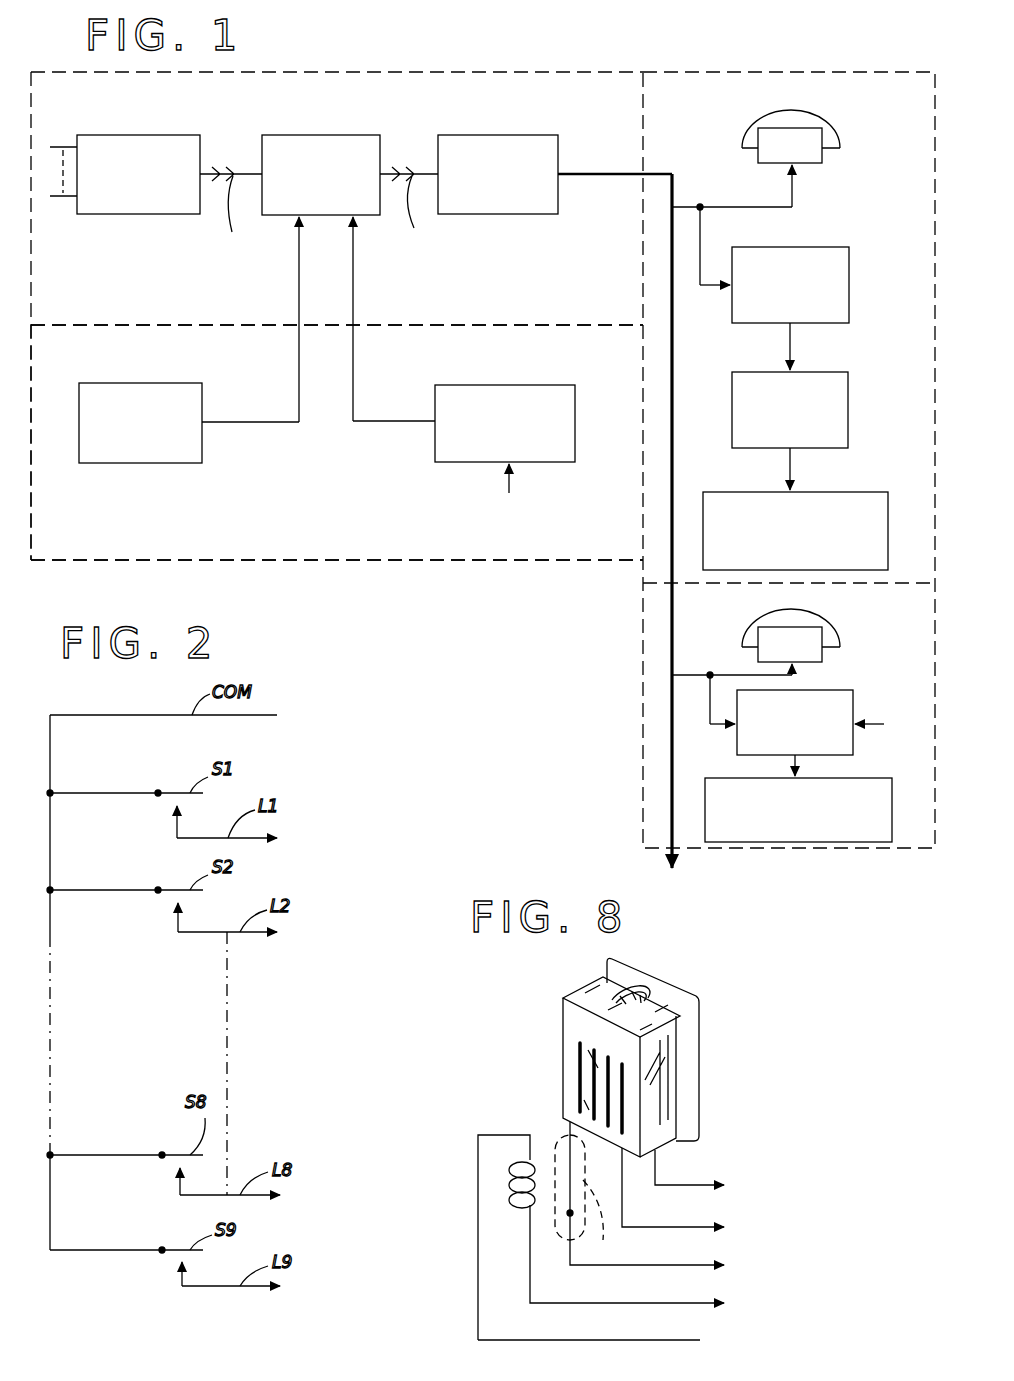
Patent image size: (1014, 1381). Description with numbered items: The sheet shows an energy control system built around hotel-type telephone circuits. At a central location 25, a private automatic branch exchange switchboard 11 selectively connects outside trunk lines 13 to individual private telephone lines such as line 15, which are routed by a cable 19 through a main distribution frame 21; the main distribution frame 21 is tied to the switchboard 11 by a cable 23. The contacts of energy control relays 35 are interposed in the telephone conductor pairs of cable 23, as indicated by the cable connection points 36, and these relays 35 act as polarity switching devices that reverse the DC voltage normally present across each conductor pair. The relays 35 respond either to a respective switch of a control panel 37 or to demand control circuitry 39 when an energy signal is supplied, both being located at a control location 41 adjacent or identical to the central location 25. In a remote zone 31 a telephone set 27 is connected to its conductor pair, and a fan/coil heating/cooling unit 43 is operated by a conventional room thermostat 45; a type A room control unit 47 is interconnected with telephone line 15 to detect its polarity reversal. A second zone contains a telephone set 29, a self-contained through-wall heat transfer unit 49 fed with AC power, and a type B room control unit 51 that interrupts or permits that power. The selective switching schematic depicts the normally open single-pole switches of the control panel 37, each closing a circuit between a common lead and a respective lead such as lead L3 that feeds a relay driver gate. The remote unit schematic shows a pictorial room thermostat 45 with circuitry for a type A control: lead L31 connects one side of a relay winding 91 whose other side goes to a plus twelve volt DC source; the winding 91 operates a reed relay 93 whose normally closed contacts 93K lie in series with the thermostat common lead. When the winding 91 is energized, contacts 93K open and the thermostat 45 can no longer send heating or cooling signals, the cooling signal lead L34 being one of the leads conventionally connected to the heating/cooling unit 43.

In FIG. 1, the private automatic branch exchange central switchboard 11 is at (126, 135).
In FIG. 1, the trunk lines 13 is at (60, 147).
In FIG. 1, the individual private telephone line 15 is at (690, 207).
In FIG. 1, the cable 19 is at (610, 174).
In FIG. 1, the main distribution frame 21 is at (493, 135).
In FIG. 1, the cable 23 is at (233, 172).
In FIG. 1, the central location 25 is at (376, 72).
In FIG. 1, the telephone set 27 is at (832, 151).
In FIG. 1, the telephone set 29 is at (832, 646).
In FIG. 1, the zone 31 is at (770, 72).
In FIG. 1, the energy control relays 35 is at (320, 135).
In FIG. 1, the cable connection points 36 is at (329, 215).
In FIG. 1, the control panel 37 is at (150, 383).
In FIG. 1, the demand control circuitry 39 is at (495, 385).
In FIG. 1, the control location 41 is at (197, 563).
In FIG. 1, the heating/cooling unit 43 is at (888, 538).
In FIG. 1, the room thermostat 45 is at (850, 416).
In FIG. 8, the room thermostat 45 is at (563, 1033).
In FIG. 1, the room control unit type A 47 is at (849, 283).
In FIG. 1, the self-contained heat transfer unit 49 is at (892, 818).
In FIG. 1, the room control unit type B 51 is at (853, 702).
In FIG. 8, the relay winding 91 is at (513, 1206).
In FIG. 8, the reed relay 93 is at (690, 1199).
In FIG. 8, the normally closed contacts 93K is at (574, 1156).
In FIG. 8, the lead L3 is at (703, 1184).
In FIG. 8, the cooling signal lead L34 is at (702, 1227).
In FIG. 8, the lead L31 is at (700, 1342).